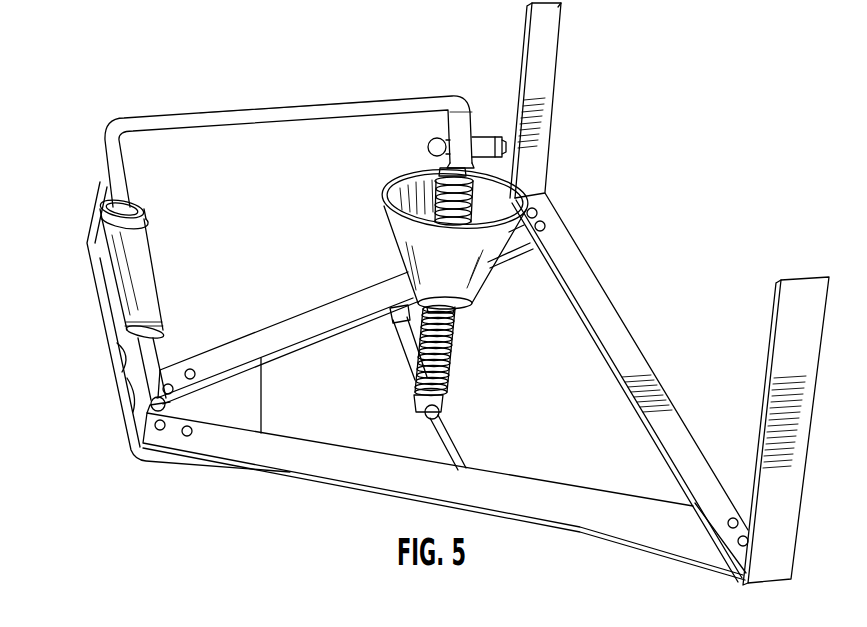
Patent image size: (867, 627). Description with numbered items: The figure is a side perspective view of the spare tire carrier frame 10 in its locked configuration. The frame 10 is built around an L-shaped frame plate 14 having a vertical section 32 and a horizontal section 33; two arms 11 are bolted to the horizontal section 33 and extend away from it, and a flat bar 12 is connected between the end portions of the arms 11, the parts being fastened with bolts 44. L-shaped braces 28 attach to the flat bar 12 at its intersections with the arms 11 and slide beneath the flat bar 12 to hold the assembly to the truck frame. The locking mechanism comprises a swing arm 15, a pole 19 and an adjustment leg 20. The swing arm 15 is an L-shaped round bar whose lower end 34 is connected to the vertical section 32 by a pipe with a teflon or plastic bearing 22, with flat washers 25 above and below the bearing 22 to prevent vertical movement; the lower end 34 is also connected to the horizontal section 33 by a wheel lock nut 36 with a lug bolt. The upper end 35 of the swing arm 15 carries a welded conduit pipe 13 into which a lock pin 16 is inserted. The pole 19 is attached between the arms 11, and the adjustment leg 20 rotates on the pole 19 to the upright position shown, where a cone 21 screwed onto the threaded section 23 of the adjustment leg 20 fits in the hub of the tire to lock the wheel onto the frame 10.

The frame 10 is at (665, 104).
The arms 11 is at (363, 298).
The flat bar 12 is at (600, 300).
The conduit pipe 13 is at (460, 118).
The frame plate 14 is at (122, 415).
The swing arm 15 is at (190, 120).
The lock pin 16 is at (488, 140).
The pole 19 is at (440, 445).
The adjustment leg 20 is at (440, 378).
The cone 21 is at (470, 285).
The bearing pipe 22 is at (110, 270).
The threaded section 23 is at (440, 178).
The flat washer 25 is at (140, 205).
The braces 28 is at (540, 53).
The vertical section 32 is at (120, 350).
The horizontal section 33 is at (268, 398).
The lower end of swing arm 34 is at (162, 366).
The upper end of swing arm 35 is at (303, 100).
The wheel lock nut 36 is at (180, 417).
The bolts 44 is at (552, 218).